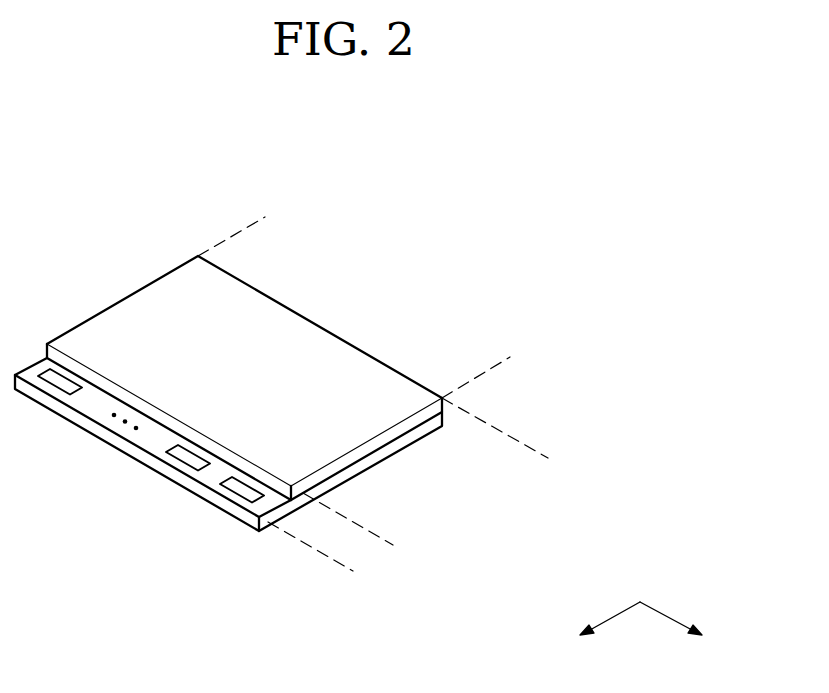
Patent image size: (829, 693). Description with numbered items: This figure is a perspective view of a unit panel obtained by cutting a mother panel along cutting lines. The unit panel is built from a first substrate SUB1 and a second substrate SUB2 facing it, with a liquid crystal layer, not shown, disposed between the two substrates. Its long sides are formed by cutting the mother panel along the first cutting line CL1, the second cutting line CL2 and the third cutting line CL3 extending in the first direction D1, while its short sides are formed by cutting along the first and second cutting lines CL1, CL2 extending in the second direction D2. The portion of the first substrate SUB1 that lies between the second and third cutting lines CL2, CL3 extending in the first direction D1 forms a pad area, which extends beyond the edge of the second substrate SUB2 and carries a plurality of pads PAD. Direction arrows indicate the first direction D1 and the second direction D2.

The first substrate SUB1 is at (403, 437).
The second substrate SUB2 is at (228, 444).
The pads PAD is at (240, 487).
The first cutting line CL1 is at (401, 331).
The second cutting line CL2 is at (425, 451).
The third cutting line CL3 is at (330, 556).
The first direction D1 is at (683, 632).
The second direction D2 is at (594, 632).